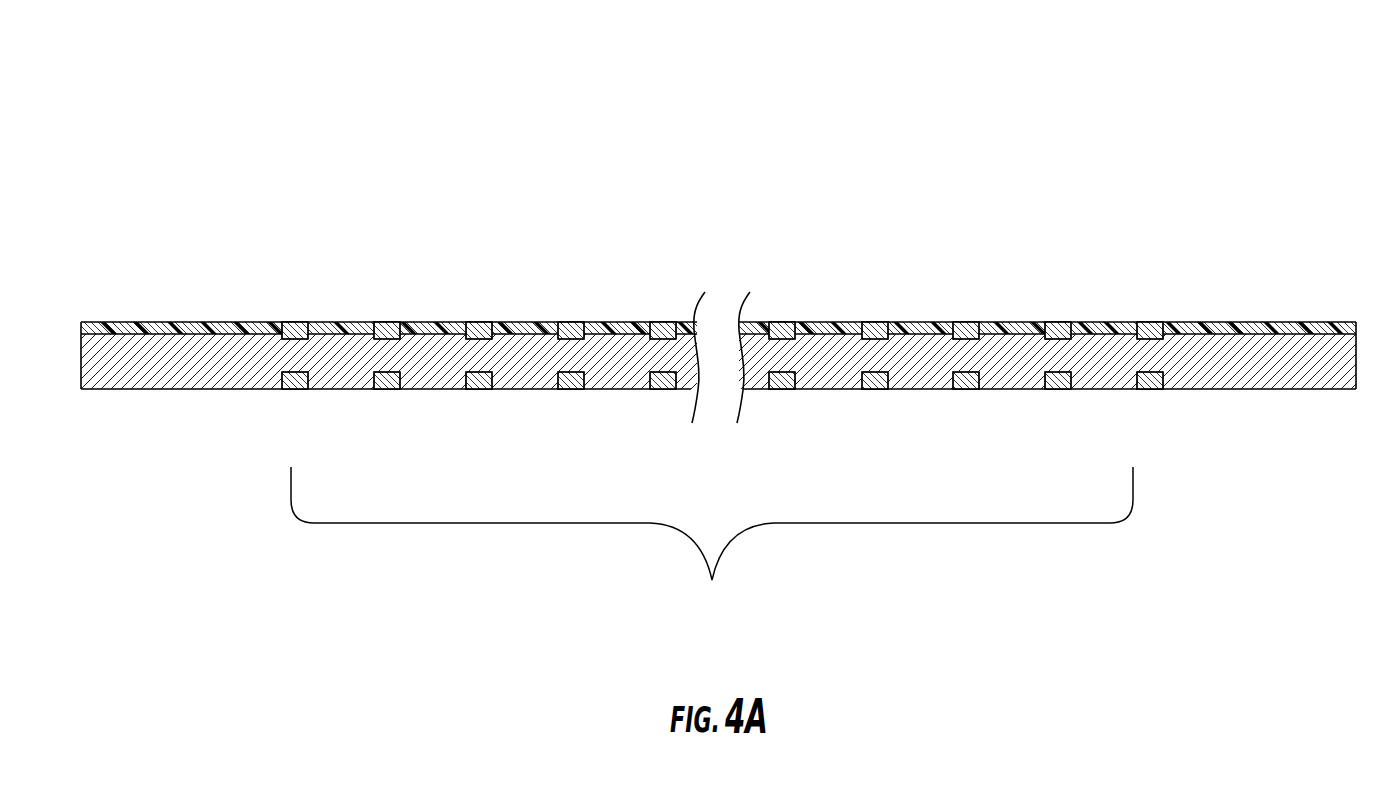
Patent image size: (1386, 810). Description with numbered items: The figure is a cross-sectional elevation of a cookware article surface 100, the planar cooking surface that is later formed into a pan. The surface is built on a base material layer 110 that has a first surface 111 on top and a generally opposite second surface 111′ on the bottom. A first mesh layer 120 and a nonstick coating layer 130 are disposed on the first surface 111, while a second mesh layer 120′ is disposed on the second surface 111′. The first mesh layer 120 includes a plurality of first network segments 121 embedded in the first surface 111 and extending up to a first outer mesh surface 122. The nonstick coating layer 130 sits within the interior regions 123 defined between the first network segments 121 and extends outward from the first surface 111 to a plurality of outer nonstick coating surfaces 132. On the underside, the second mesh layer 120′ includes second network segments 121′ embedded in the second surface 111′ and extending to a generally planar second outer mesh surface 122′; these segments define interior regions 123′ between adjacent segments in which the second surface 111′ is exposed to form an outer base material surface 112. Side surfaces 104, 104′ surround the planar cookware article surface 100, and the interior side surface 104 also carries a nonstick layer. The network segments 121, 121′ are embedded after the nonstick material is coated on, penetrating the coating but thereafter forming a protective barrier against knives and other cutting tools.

The cookware article surface 100 is at (480, 53).
The interior side surface 104 is at (1258, 340).
The exterior side surface 104′ is at (1153, 388).
The base material layer 110 is at (188, 387).
The first surface 111 is at (388, 322).
The second surface 111′ is at (337, 391).
The outer base material surface 112 is at (523, 390).
The first mesh layer 120 is at (570, 322).
The second mesh layer 120′ is at (568, 390).
The first network segments 121 is at (293, 322).
The second network segments 121′ is at (477, 390).
The first outer mesh surface 122 is at (662, 322).
The second outer mesh surface 122′ is at (293, 390).
The interior regions 123 is at (607, 318).
The interior regions 123′ is at (621, 396).
The nonstick coating layer 130 is at (347, 322).
The outer nonstick coating surfaces 132 is at (440, 322).